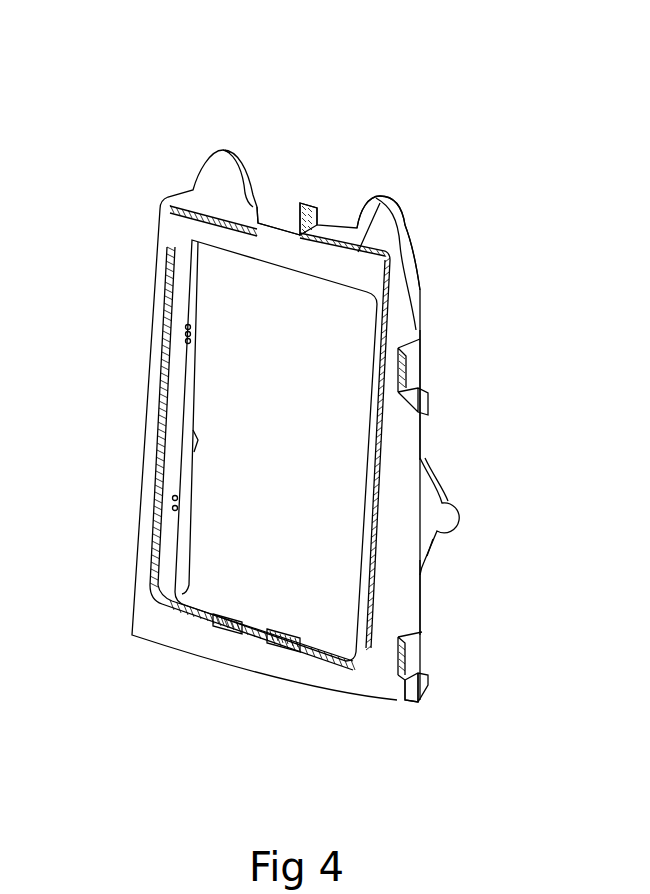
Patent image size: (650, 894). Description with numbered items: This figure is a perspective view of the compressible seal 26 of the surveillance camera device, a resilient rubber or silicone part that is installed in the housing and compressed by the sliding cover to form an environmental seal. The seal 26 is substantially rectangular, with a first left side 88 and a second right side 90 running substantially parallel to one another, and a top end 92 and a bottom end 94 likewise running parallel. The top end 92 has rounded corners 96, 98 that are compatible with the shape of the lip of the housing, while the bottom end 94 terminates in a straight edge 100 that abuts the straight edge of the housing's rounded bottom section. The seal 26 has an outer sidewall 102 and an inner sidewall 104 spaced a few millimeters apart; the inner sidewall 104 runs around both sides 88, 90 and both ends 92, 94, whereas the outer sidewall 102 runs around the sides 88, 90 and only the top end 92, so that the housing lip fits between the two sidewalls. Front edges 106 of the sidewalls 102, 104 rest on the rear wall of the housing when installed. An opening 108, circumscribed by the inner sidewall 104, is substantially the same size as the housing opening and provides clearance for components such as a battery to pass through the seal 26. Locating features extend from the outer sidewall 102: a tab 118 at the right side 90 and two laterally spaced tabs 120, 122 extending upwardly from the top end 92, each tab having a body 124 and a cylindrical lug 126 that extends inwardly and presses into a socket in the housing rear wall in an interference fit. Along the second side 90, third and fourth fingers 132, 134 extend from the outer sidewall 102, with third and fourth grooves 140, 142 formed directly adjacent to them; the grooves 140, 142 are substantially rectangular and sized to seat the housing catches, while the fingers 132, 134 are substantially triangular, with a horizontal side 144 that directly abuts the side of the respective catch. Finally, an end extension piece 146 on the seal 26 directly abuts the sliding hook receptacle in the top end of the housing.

The compressible seal 26 is at (348, 129).
The first left side 88 is at (150, 455).
The second right side 90 is at (400, 521).
The top end 92 is at (380, 203).
The bottom end 94 is at (236, 653).
The rounded corner 96 is at (163, 200).
The rounded corner 98 is at (420, 275).
The straight edge 100 is at (300, 690).
The outer sidewall 102 is at (408, 452).
The inner sidewall 104 is at (173, 355).
The front edges 106 is at (425, 316).
The opening 108 is at (245, 518).
The tab 118 is at (427, 545).
The tab 120 is at (205, 172).
The tab 122 is at (407, 217).
The body 124 is at (247, 160).
The cylindrical lug 126 is at (226, 152).
The third finger 132 is at (428, 402).
The fourth finger 134 is at (428, 700).
The third groove 140 is at (412, 364).
The fourth groove 142 is at (412, 653).
The horizontal side 144 is at (417, 702).
The end extension piece 146 is at (312, 218).